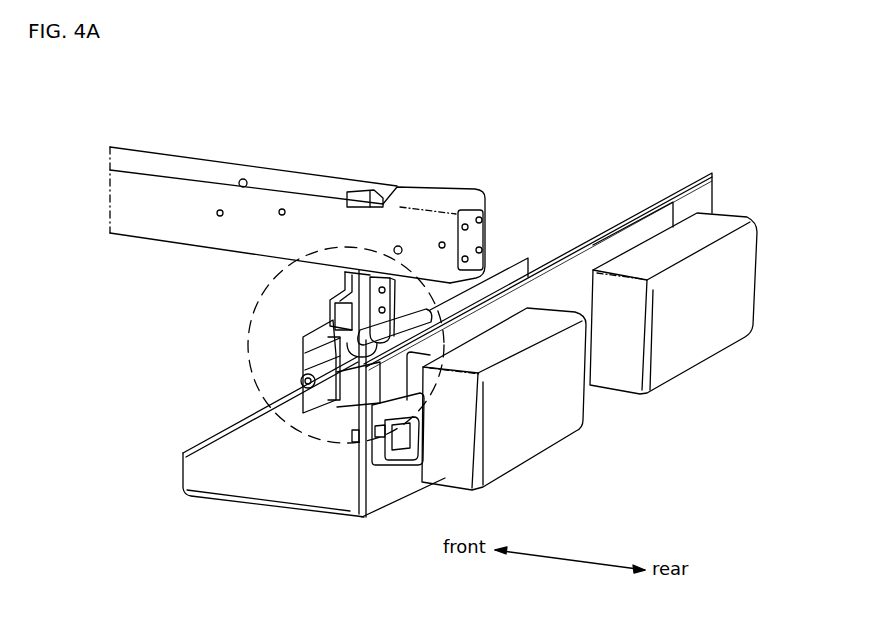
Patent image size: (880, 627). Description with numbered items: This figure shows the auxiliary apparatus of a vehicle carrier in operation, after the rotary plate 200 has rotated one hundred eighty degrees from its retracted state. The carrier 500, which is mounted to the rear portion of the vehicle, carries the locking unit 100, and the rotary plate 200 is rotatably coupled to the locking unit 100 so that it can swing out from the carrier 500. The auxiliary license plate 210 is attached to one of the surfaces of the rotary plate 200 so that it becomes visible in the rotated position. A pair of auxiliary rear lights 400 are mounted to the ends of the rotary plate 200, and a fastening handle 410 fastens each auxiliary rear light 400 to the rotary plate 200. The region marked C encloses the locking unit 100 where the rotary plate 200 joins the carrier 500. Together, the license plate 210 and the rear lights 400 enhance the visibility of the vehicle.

The carrier 500 is at (268, 207).
The auxiliary license plate 210 is at (580, 263).
The locking unit 100 is at (317, 312).
The rotary plate 200 is at (295, 475).
The fastening handle 410 is at (408, 418).
The auxiliary rear light 400 is at (532, 422).
The detail region circle C is at (248, 357).